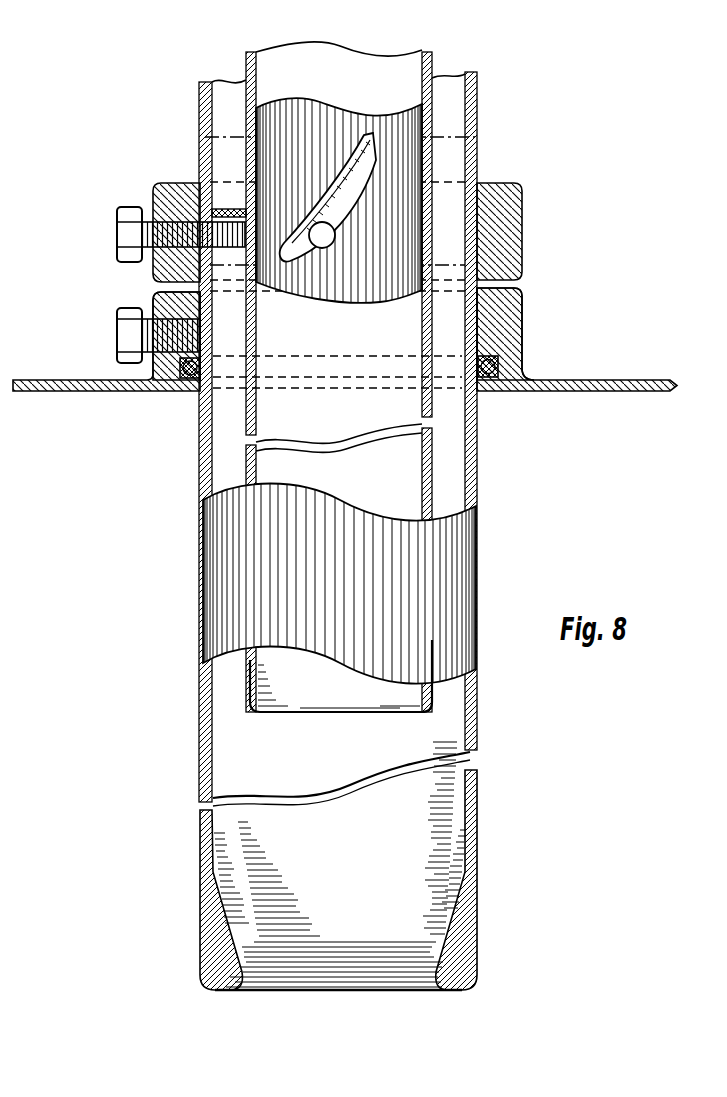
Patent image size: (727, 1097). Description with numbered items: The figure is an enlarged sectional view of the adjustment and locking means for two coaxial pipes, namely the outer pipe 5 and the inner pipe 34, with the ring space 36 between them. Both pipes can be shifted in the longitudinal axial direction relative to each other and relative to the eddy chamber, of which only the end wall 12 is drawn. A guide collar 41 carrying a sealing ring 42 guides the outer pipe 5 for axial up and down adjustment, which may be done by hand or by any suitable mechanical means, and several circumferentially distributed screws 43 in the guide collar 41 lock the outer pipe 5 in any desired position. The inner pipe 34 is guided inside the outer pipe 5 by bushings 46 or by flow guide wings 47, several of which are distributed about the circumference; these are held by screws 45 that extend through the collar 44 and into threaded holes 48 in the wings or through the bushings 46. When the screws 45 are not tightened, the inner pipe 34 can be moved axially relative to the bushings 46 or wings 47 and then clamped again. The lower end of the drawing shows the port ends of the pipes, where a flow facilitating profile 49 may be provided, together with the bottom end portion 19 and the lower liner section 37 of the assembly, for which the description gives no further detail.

The outer pipe 5 is at (476, 714).
The end wall 12 is at (656, 378).
The tube bottom 19 is at (330, 988).
The inner pipe 34 is at (432, 64).
The ring space 36 is at (455, 112).
The liner cup 37 is at (295, 713).
The guide collar 41 is at (523, 330).
The sealing ring 42 is at (490, 366).
The screws 43 is at (116, 337).
The collar 44 is at (523, 222).
The screws 45 is at (124, 207).
The bushings 46 is at (226, 210).
The flow guide wings 47 is at (300, 258).
The threaded holes 48 is at (327, 241).
The flow facilitating profile 49 is at (447, 951).